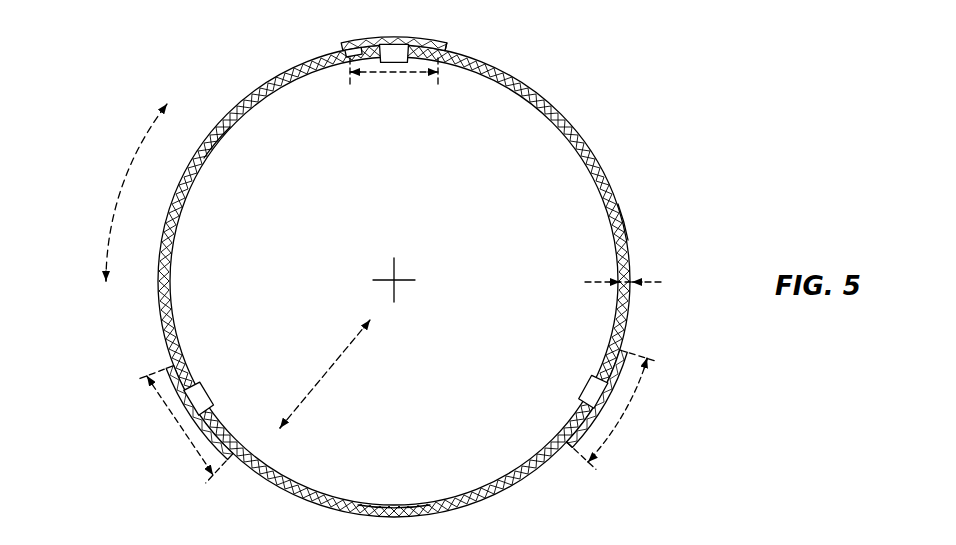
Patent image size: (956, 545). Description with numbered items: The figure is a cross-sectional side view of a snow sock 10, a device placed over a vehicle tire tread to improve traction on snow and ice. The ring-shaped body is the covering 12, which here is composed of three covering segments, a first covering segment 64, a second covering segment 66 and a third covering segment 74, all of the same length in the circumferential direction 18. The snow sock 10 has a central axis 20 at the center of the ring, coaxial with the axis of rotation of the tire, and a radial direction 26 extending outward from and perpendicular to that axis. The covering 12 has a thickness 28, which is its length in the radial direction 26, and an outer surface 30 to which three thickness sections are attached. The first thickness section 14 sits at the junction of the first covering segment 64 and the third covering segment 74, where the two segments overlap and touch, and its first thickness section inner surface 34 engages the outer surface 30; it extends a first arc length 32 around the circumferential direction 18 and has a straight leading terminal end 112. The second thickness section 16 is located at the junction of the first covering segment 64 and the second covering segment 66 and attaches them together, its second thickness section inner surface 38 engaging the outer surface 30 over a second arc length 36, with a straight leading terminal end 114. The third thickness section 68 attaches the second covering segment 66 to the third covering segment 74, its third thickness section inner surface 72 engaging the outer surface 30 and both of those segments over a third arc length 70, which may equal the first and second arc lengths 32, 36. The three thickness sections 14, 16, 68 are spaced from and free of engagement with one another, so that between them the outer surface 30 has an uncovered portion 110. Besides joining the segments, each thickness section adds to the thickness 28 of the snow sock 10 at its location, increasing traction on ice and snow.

The snow sock 10 is at (662, 60).
The covering 12 is at (380, 281).
The first thickness section 14 is at (405, 73).
The second thickness section 16 is at (165, 398).
The circumferential direction 18 is at (128, 175).
The central axis 20 is at (396, 268).
The radial direction 26 is at (326, 374).
The thickness 28 is at (657, 282).
The outer surface 30 is at (607, 172).
The first arc length 32 is at (393, 73).
The first thickness section inner surface 34 is at (338, 53).
The second arc length 36 is at (160, 398).
The second thickness section inner surface 38 is at (188, 381).
The first covering segment 64 is at (204, 158).
The second covering segment 66 is at (358, 505).
The third thickness section 68 is at (598, 380).
The third arc length 70 is at (625, 408).
The third thickness section inner surface 72 is at (593, 416).
The third covering segment 74 is at (570, 135).
The uncovered portion 110 is at (618, 204).
The leading terminal end 112 is at (450, 46).
The leading terminal end 114 is at (574, 448).